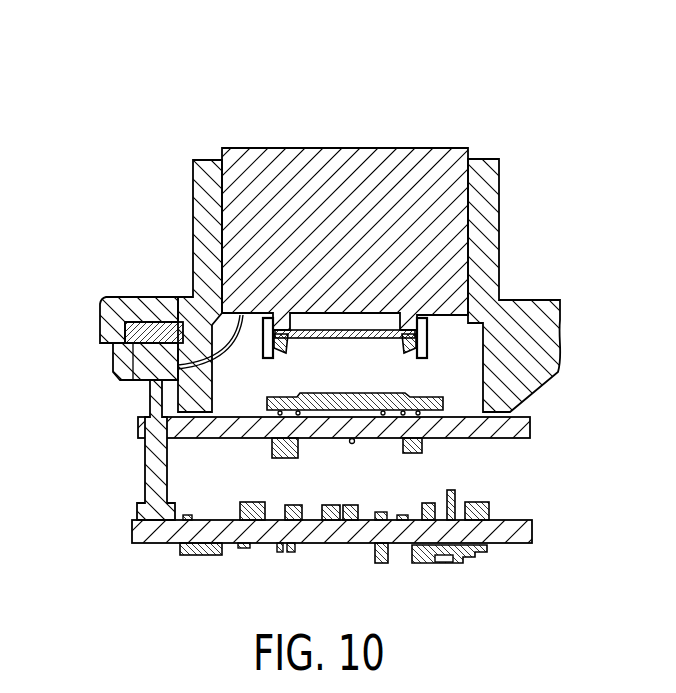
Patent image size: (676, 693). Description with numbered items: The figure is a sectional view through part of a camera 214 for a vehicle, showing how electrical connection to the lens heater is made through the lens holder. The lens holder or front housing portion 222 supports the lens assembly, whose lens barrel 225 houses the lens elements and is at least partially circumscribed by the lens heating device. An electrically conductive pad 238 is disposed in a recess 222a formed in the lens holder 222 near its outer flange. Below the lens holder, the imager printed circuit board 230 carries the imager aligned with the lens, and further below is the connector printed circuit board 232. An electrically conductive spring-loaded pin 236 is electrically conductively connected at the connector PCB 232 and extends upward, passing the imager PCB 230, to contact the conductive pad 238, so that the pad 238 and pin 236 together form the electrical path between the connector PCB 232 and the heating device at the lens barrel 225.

The camera 214 is at (240, 116).
The lens holder 222 is at (480, 252).
The recesses 222a is at (113, 343).
The lens barrel 225 is at (387, 162).
The imager printed circuit board 230 is at (511, 413).
The connector printed circuit board 232 is at (387, 524).
The spring-loaded pin 236 is at (153, 473).
The electrically conductive pad 238 is at (128, 321).